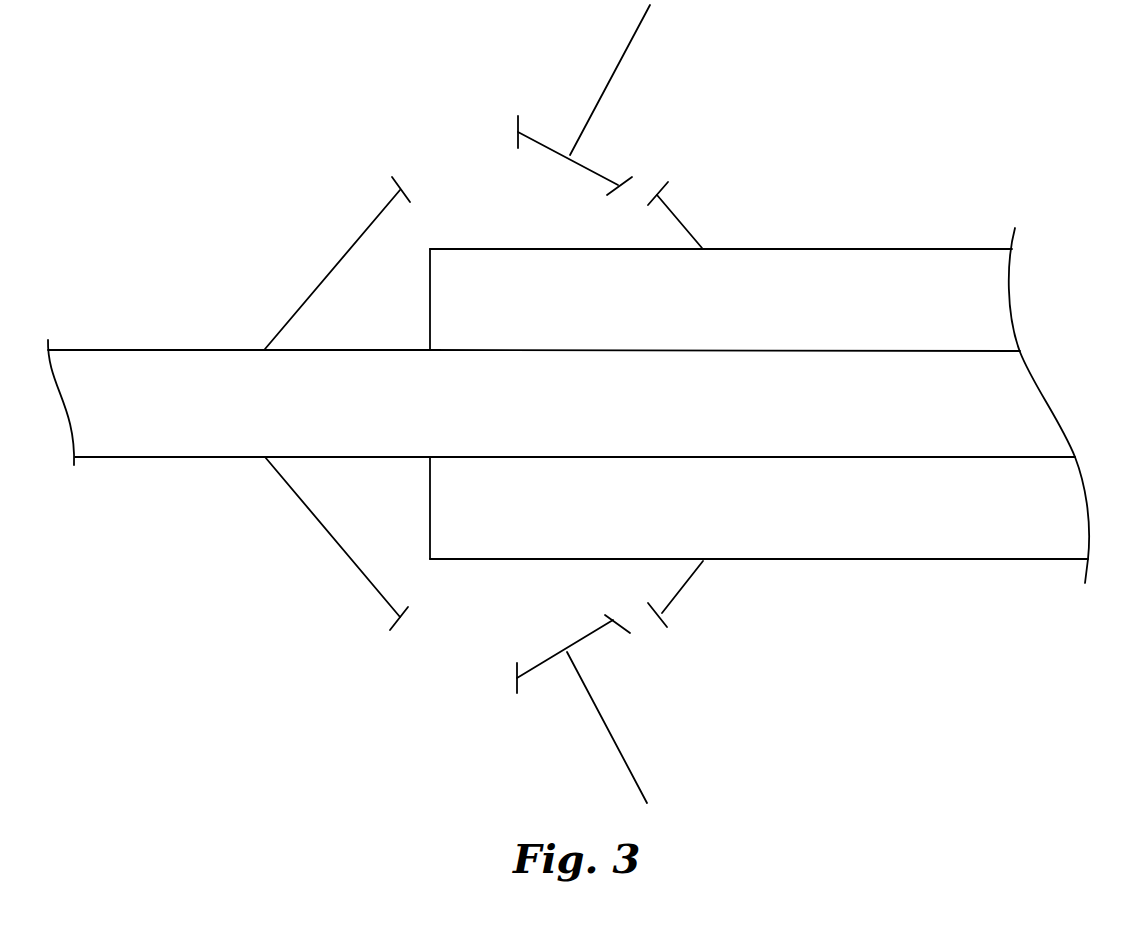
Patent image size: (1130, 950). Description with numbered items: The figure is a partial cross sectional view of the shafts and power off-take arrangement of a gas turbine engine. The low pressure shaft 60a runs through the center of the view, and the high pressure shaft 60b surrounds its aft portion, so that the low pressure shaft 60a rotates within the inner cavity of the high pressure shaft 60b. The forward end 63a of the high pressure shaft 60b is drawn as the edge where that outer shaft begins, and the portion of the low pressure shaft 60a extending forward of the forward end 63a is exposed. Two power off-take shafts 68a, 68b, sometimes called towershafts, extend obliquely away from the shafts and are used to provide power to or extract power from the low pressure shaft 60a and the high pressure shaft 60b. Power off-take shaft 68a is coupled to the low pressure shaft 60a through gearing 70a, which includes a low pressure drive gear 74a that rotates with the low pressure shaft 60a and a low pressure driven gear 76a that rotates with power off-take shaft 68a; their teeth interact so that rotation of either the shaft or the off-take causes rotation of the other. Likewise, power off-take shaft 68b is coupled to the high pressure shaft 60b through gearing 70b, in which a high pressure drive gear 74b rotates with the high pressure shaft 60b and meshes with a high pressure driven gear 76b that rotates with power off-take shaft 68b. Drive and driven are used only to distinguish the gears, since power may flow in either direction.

The low pressure shaft 60a is at (218, 350).
The high pressure shaft 60b is at (896, 249).
The forward end 63a is at (430, 312).
The power off-take shaft 68a is at (605, 730).
The power off-take shaft 68b is at (603, 92).
The gearing 70a is at (338, 684).
The gearing 70b is at (748, 65).
The low pressure drive gear 74a is at (335, 262).
The high pressure drive gear 74b is at (683, 222).
The low pressure driven gear 76a is at (542, 660).
The high pressure driven gear 76b is at (602, 168).